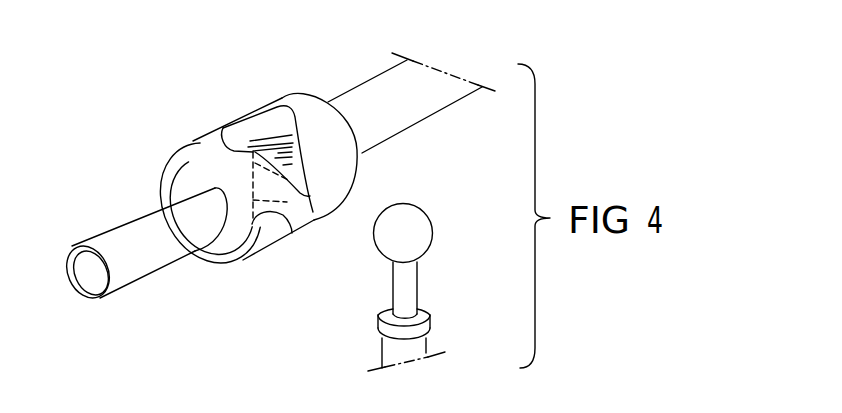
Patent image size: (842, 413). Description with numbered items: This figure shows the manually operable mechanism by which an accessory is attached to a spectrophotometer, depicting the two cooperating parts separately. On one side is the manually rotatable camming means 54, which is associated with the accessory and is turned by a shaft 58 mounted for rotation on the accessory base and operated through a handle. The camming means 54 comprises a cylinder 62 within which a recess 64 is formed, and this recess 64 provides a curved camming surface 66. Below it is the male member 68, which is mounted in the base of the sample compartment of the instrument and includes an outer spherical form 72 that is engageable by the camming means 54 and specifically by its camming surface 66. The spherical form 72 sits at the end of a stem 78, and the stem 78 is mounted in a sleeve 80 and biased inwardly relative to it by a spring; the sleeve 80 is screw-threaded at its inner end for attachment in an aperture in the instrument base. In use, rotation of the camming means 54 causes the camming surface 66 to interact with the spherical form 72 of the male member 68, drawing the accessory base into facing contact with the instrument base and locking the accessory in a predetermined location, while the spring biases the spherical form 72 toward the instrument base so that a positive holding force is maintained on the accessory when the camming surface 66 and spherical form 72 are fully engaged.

The camming means 54 is at (281, 154).
The shaft 58 is at (422, 102).
The cylinder 62 is at (203, 143).
The recess 64 is at (308, 207).
The camming surface 66 is at (273, 117).
The male member 68 is at (340, 311).
The spherical form 72 is at (418, 228).
The stem 78 is at (412, 287).
The sleeve 80 is at (393, 354).